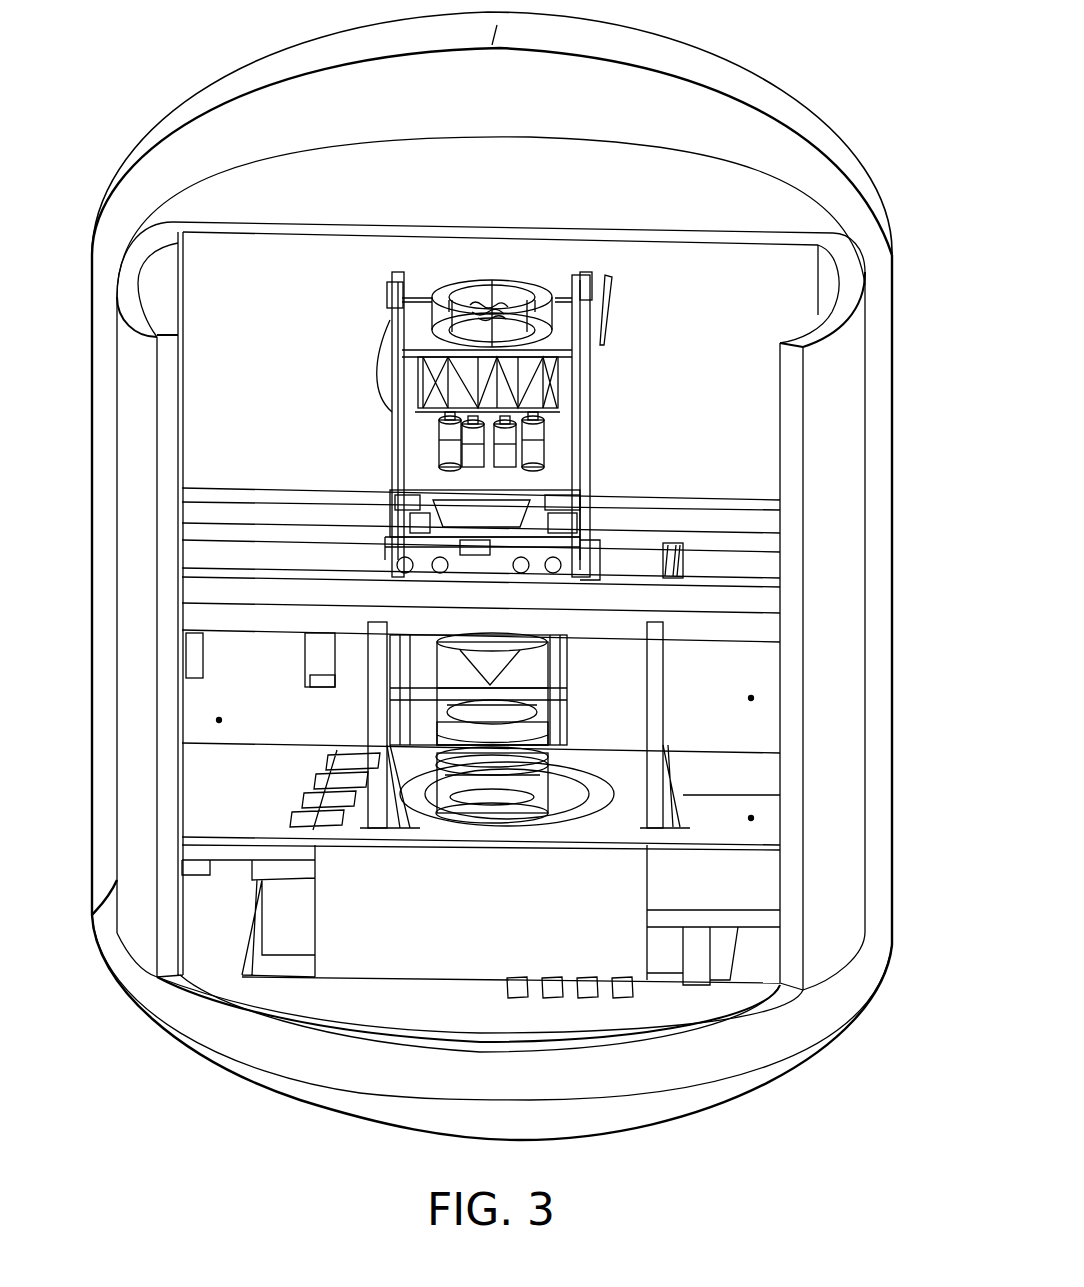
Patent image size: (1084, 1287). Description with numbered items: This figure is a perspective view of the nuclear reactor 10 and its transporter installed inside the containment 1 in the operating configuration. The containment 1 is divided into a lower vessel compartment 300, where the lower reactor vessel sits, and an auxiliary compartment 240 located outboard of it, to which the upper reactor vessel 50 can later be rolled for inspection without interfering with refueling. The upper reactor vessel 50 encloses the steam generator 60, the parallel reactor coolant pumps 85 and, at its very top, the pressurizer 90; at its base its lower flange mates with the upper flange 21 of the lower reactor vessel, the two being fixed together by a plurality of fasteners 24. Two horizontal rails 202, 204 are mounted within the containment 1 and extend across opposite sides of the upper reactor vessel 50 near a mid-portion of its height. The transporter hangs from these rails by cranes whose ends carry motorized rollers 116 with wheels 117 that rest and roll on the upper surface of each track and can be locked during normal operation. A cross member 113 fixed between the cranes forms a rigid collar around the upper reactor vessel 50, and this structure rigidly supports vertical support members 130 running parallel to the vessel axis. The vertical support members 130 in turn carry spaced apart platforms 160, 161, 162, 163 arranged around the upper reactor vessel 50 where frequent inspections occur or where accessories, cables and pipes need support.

The containment 1 is at (773, 1037).
The auxiliary compartment 240 is at (219, 720).
The lower vessel compartment 300 is at (752, 698).
The second horizontal rail 204 is at (765, 525).
The first horizontal rail 202 is at (768, 603).
The vertical support member 130 is at (583, 530).
The platform 160 is at (418, 340).
The platform 161 is at (555, 340).
The pressurizer 90 is at (545, 390).
The reactor coolant pump 85 is at (445, 450).
The platform 162 is at (575, 492).
The motorized roller 116 is at (410, 556).
The cross member 113 is at (473, 545).
The wheel 117 is at (480, 643).
The steam generator 60 is at (447, 645).
The upper reactor vessel 50 is at (515, 675).
The platform 163 is at (547, 737).
The fastener 24 is at (508, 767).
The upper flange 21 is at (463, 780).
The nuclear reactor 10 is at (487, 797).